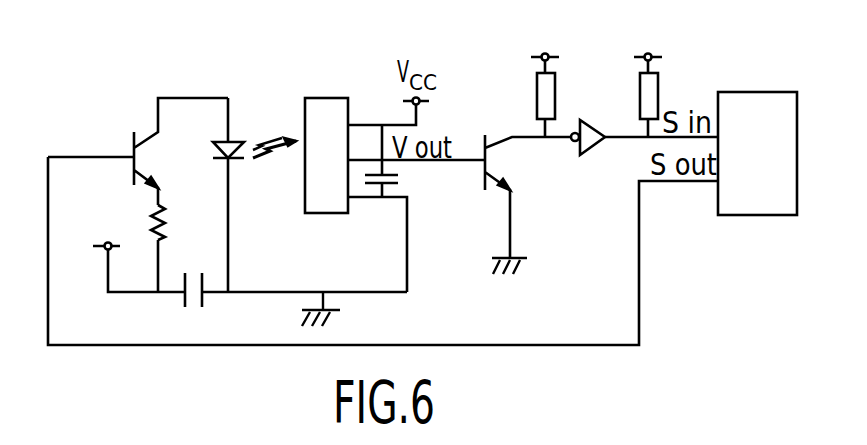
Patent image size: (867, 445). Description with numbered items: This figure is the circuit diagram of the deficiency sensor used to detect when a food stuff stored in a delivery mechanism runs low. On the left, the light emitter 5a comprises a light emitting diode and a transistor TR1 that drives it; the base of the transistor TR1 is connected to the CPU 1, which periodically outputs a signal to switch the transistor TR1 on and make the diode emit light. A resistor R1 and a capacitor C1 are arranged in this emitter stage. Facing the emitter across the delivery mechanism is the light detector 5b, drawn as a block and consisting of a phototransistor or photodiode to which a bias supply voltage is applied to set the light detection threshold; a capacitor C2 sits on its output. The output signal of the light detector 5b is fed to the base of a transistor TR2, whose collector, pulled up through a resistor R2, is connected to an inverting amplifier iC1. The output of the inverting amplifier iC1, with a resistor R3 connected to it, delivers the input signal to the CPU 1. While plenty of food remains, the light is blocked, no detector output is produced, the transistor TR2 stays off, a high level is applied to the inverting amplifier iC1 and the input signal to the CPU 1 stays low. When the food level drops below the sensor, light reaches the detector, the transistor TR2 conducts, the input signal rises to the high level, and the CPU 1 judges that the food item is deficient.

The CPU 1 is at (750, 107).
The light emitter 5a is at (261, 76).
The light detector 5b is at (305, 202).
The transistor TR1 is at (181, 151).
The transistor TR2 is at (522, 176).
The resistor R1 is at (177, 248).
The resistor R2 is at (559, 96).
The resistor R3 is at (663, 96).
The capacitor C1 is at (292, 309).
The capacitor C2 is at (389, 228).
The inverting amplifier iC1 is at (644, 162).